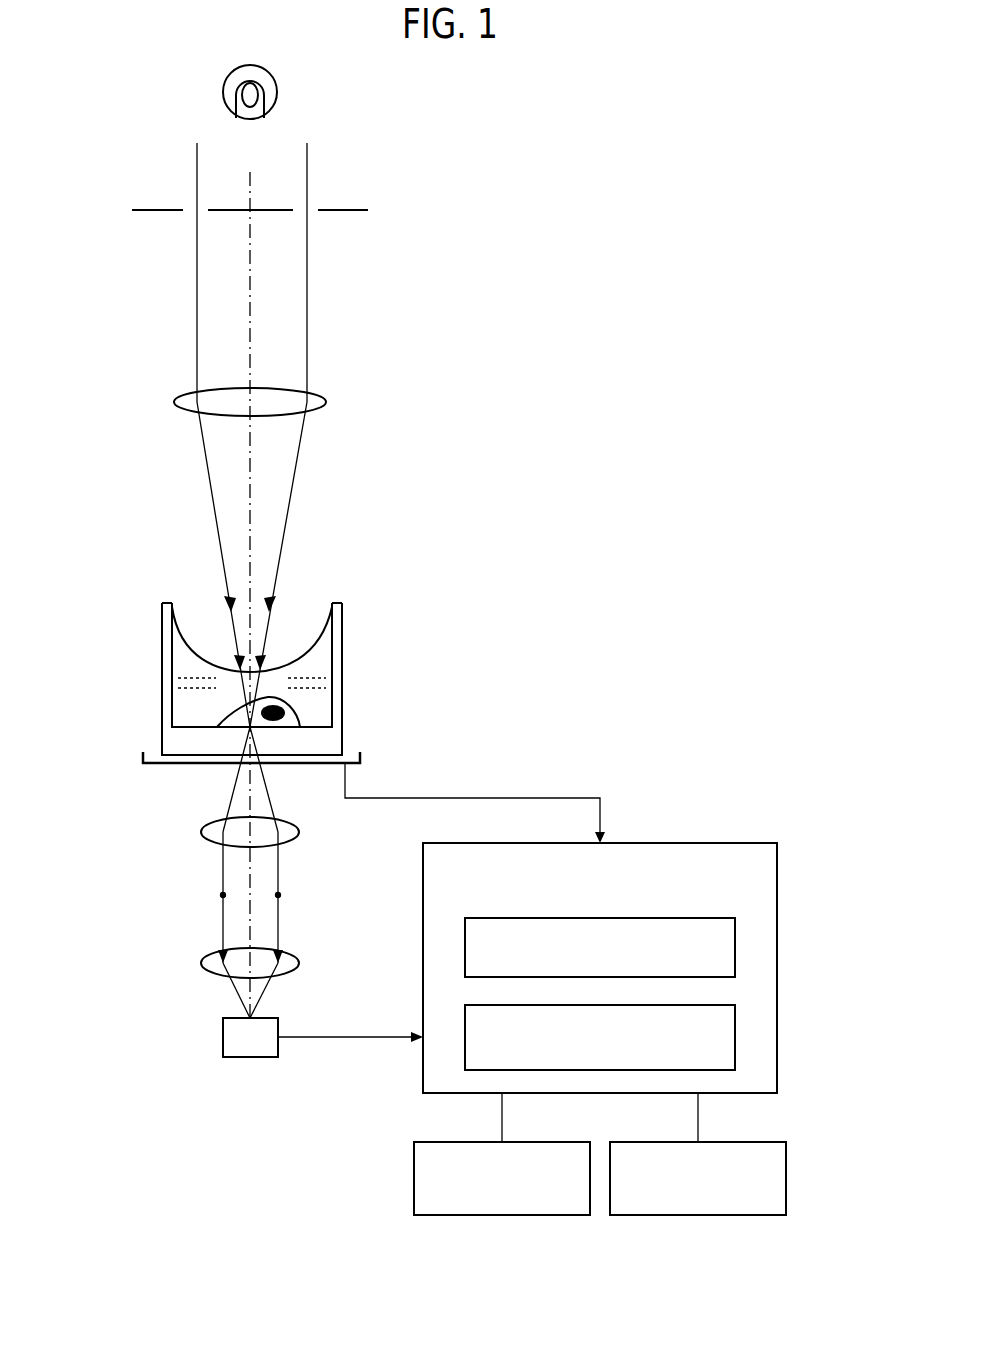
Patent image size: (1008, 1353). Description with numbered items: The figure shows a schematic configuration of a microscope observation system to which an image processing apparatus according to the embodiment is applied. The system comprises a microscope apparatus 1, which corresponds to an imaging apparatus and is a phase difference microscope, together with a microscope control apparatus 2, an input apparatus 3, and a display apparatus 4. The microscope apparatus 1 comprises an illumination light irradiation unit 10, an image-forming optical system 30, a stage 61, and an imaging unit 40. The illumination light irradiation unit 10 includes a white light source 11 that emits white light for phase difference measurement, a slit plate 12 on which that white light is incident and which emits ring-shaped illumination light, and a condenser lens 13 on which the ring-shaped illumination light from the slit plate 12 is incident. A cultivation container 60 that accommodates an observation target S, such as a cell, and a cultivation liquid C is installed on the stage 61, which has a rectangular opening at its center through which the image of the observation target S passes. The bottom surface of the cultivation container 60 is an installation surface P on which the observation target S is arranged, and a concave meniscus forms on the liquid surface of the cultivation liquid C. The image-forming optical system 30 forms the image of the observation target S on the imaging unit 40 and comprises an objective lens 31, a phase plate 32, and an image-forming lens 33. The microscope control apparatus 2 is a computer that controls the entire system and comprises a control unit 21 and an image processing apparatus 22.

The microscope apparatus 1 is at (437, 128).
The illumination light irradiation unit 10 is at (104, 198).
The white light source 11 is at (278, 90).
The slit plate 12 is at (358, 209).
The condenser lens 13 is at (326, 402).
The cultivation container 60 is at (162, 650).
The cultivation liquid C is at (320, 656).
The observation target S is at (292, 716).
The installation surface P is at (188, 736).
The stage 61 is at (303, 767).
The image-forming optical system 30 is at (128, 905).
The objective lens 31 is at (201, 832).
The phase plate 32 is at (221, 895).
The image-forming lens 33 is at (201, 963).
The imaging unit 40 is at (222, 1039).
The microscope control apparatus 2 is at (752, 843).
The control unit 21 is at (736, 946).
The image processing apparatus 22 is at (736, 1034).
The input apparatus 3 is at (554, 1142).
The display apparatus 4 is at (750, 1142).